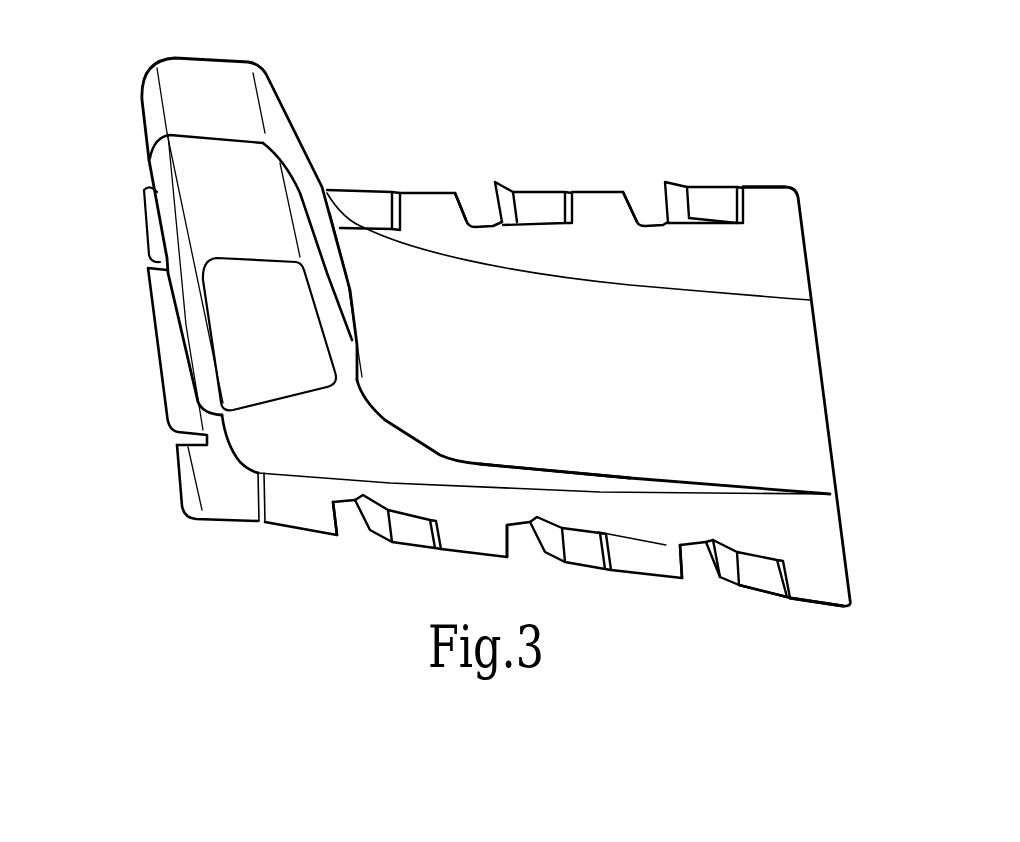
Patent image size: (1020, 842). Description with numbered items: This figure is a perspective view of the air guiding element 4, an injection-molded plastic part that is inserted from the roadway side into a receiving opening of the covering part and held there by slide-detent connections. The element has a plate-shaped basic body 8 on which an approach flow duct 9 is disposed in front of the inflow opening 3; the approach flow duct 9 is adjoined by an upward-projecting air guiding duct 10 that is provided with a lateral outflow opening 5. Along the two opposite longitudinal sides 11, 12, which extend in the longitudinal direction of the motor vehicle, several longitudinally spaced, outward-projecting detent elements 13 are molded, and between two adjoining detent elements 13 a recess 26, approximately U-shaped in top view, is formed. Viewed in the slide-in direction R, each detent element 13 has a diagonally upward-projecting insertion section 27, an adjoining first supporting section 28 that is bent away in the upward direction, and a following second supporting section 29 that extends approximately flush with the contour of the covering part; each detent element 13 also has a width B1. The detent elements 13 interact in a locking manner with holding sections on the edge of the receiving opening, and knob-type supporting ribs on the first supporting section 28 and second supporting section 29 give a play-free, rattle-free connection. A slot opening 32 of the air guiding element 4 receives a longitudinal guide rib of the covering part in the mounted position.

The inflow opening 3 is at (245, 328).
The air guiding element 4 is at (770, 183).
The lateral outflow opening 5 is at (196, 167).
The plate-shaped basic body 8 is at (742, 260).
The approach flow duct 9 is at (733, 390).
The air guiding duct 10 is at (218, 90).
The longitudinal side 11 is at (505, 175).
The longitudinal side 12 is at (297, 537).
The detent element 13 is at (237, 523).
The recess 26 is at (473, 197).
The insertion section 27 is at (677, 213).
The first supporting section 28 is at (708, 203).
The second supporting section 29 is at (770, 212).
The slot opening 32 is at (150, 259).
The width B1 is at (641, 500).
The slide-in direction R is at (848, 421).